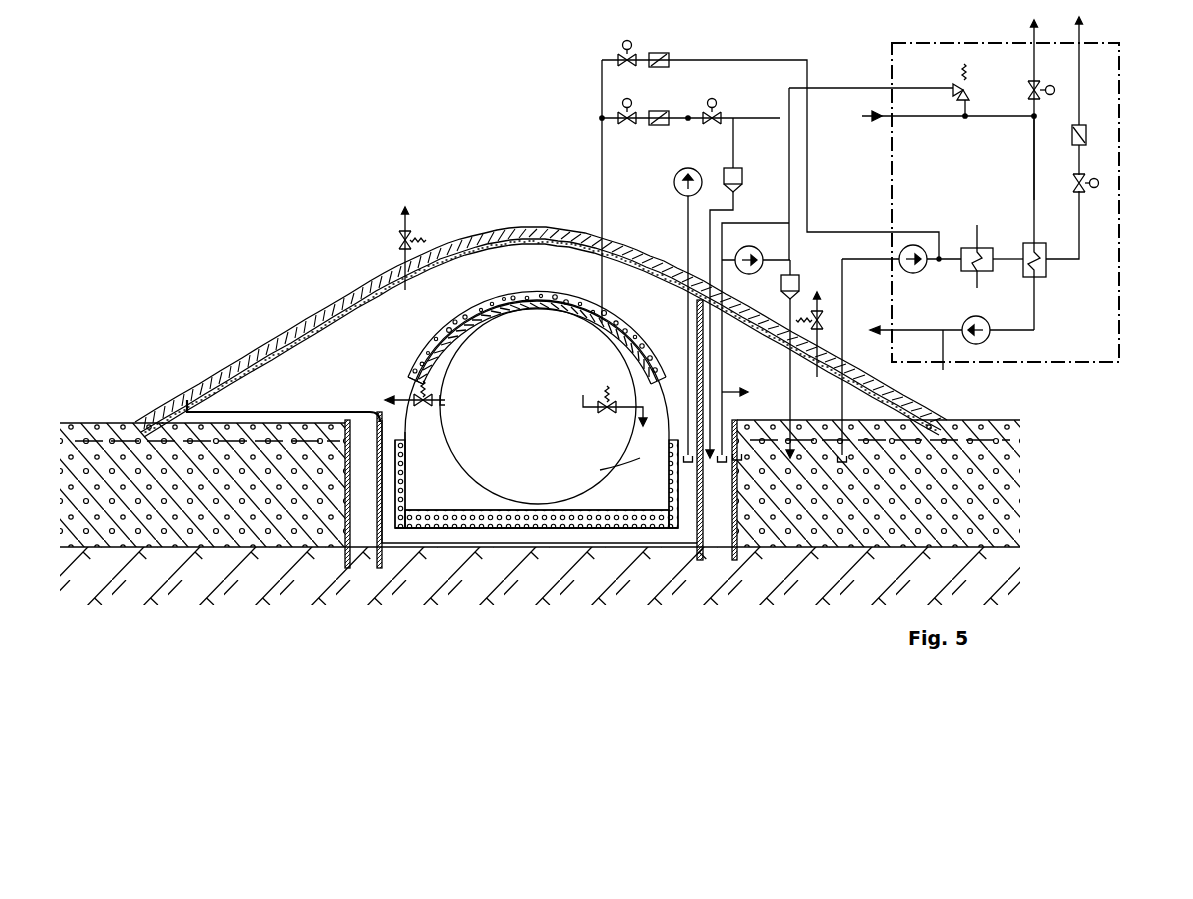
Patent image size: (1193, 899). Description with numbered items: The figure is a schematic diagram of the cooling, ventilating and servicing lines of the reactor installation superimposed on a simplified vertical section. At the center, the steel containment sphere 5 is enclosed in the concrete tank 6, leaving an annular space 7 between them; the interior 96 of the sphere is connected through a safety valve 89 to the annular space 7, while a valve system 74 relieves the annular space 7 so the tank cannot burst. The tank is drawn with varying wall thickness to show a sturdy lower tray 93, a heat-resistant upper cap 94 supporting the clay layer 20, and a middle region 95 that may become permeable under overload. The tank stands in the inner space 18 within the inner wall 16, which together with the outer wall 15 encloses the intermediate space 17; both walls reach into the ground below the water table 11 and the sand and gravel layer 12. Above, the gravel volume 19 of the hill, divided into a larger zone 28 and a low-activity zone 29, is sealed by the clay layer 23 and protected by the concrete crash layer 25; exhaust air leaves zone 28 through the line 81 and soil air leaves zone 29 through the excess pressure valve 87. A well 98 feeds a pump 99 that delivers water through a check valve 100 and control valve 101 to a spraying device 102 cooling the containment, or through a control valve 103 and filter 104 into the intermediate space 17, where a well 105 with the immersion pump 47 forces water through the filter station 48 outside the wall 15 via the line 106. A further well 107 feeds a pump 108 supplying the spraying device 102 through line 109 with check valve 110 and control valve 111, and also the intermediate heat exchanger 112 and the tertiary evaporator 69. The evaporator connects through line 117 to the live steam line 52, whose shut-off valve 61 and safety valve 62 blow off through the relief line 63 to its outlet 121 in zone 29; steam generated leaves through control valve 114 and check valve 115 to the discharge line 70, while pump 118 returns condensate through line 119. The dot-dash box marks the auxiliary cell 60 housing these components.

The containment 5 is at (458, 355).
The concrete tank 6 is at (400, 457).
The annular space 7 is at (537, 414).
The water table 11 is at (103, 423).
The sand and gravel layer 12 is at (985, 432).
The wall 15 is at (738, 533).
The wall 16 is at (738, 521).
The intermediate space 17 is at (722, 500).
The inner space 18 is at (455, 535).
The gravel volume 19 is at (333, 387).
The clay layer 20 is at (472, 308).
The clay layer 23 is at (485, 240).
The concrete layer 25 is at (528, 230).
The zone 28 is at (270, 348).
The zone 29 is at (750, 384).
The pumping installation 47 is at (760, 254).
The filter station 48 is at (780, 289).
The live steam line 52 is at (925, 118).
The auxiliary cell 60 is at (1121, 215).
The shut-off valve 61 is at (1026, 92).
The safety valve 62 is at (955, 86).
The relief line 63 is at (787, 197).
The tertiary evaporator 69 is at (1048, 272).
The discharge line 70 is at (1084, 42).
The valve system 74 is at (440, 403).
The line 81 is at (398, 240).
The excess pressure valve 87 is at (820, 308).
The safety valve 89 is at (606, 413).
The tray 93 is at (435, 512).
The cap 94 is at (414, 368).
The middle region 95 is at (405, 430).
The interior 96 is at (600, 466).
The well 98 is at (690, 440).
The pump 99 is at (676, 194).
The check valve 100 is at (658, 111).
The control valve 101 is at (622, 125).
The spraying device 102 is at (560, 296).
The control valve 103 is at (721, 114).
The filter 104 is at (742, 172).
The well 105 is at (737, 452).
The line 106 is at (788, 363).
The well 107 is at (846, 450).
The pump 108 is at (916, 273).
The line 109 is at (740, 60).
The check valve 110 is at (658, 52).
The control valve 111 is at (618, 58).
The intermediate heat exchanger 112 is at (985, 272).
The control valve 114 is at (1073, 192).
The check valve 115 is at (1088, 136).
The line 117 is at (1032, 172).
The pump 118 is at (990, 340).
The line 119 is at (913, 357).
The outlet 121 is at (730, 395).